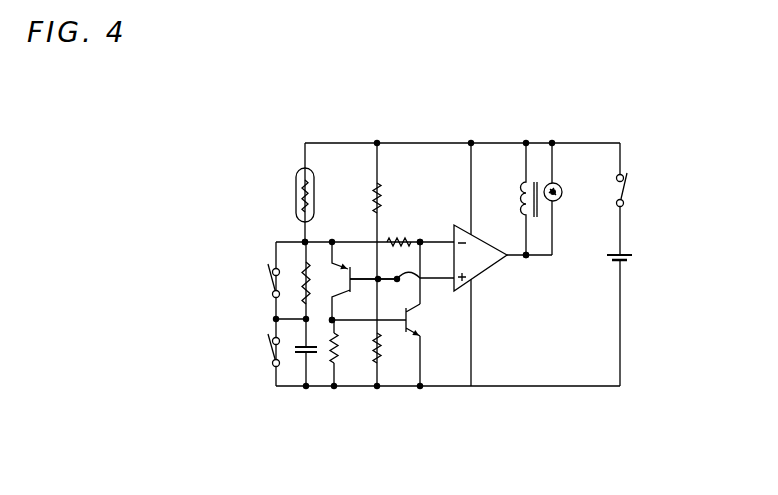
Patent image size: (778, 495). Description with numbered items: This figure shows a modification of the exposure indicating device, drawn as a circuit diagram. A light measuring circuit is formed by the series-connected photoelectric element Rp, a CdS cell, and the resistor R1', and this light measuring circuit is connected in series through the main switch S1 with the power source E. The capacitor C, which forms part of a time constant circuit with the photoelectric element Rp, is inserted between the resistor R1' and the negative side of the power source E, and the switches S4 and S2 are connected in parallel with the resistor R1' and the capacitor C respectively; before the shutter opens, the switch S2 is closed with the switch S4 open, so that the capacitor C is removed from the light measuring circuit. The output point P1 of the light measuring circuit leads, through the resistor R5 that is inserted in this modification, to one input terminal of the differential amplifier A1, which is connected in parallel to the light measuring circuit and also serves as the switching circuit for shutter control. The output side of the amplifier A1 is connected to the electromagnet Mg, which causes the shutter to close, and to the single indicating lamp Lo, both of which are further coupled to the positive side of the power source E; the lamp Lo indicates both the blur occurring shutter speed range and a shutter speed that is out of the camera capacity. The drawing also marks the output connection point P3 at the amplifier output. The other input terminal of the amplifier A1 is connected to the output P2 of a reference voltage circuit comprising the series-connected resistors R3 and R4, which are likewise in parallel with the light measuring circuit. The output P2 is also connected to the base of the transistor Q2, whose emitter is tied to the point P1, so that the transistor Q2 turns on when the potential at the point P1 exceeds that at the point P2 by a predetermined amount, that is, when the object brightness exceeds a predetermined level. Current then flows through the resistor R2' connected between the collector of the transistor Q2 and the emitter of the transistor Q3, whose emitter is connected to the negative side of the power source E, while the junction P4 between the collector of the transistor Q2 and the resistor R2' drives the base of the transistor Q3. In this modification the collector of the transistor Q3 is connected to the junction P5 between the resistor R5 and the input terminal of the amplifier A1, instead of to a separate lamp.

The photoelectric element Rp is at (295, 182).
The output point of the light measuring circuit P1 is at (302, 239).
The resistor R1' is at (253, 265).
The switch S4 is at (270, 283).
The switch S2 is at (268, 348).
The capacitor C is at (290, 392).
The resistor R2' is at (326, 389).
The junction P4 is at (338, 323).
The resistor R4 is at (382, 347).
The resistor R3 is at (372, 190).
The resistor R5 is at (400, 237).
The transistor Q2 is at (347, 263).
The output of the reference voltage circuit P2 is at (420, 278).
The junction P5 is at (420, 240).
The transistor Q3 is at (417, 310).
The differential amplifier A1 is at (503, 258).
The electromagnet Mg is at (522, 190).
The indicating lamp Lo is at (545, 186).
The connection point P3 is at (526, 255).
The main switch S1 is at (626, 193).
The power source E is at (632, 259).